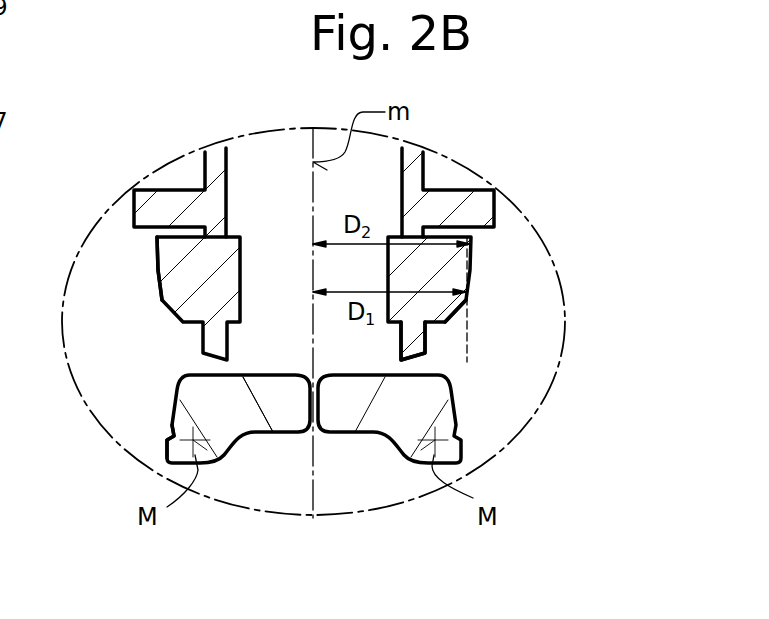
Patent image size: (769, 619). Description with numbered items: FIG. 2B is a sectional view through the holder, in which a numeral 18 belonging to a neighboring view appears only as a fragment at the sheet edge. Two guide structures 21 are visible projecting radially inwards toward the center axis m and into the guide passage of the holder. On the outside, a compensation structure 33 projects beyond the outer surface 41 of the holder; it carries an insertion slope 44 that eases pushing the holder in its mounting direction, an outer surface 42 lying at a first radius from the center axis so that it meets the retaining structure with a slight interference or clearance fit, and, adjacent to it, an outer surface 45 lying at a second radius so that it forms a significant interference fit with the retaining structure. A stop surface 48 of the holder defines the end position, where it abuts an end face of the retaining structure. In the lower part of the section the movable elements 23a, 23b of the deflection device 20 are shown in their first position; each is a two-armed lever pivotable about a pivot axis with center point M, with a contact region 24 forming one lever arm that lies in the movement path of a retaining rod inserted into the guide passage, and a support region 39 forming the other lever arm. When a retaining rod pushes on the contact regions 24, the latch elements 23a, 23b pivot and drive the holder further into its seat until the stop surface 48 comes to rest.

The adjacent element (edge fragment) 18 is at (0, 96).
The deflection device 20 is at (343, 467).
The guide structures 21 is at (250, 277).
The movable element 23a is at (173, 428).
The movable element 23b is at (450, 383).
The contact region 24 is at (222, 404).
The compensation structure 33 is at (130, 289).
The support region 39 is at (178, 449).
The outer surface of the holder 41 is at (450, 355).
The outer surface of the compensation structure 42 is at (488, 280).
The insertion slope 44 is at (477, 327).
The outer surface 45 is at (492, 252).
The stop surface 48 is at (148, 253).